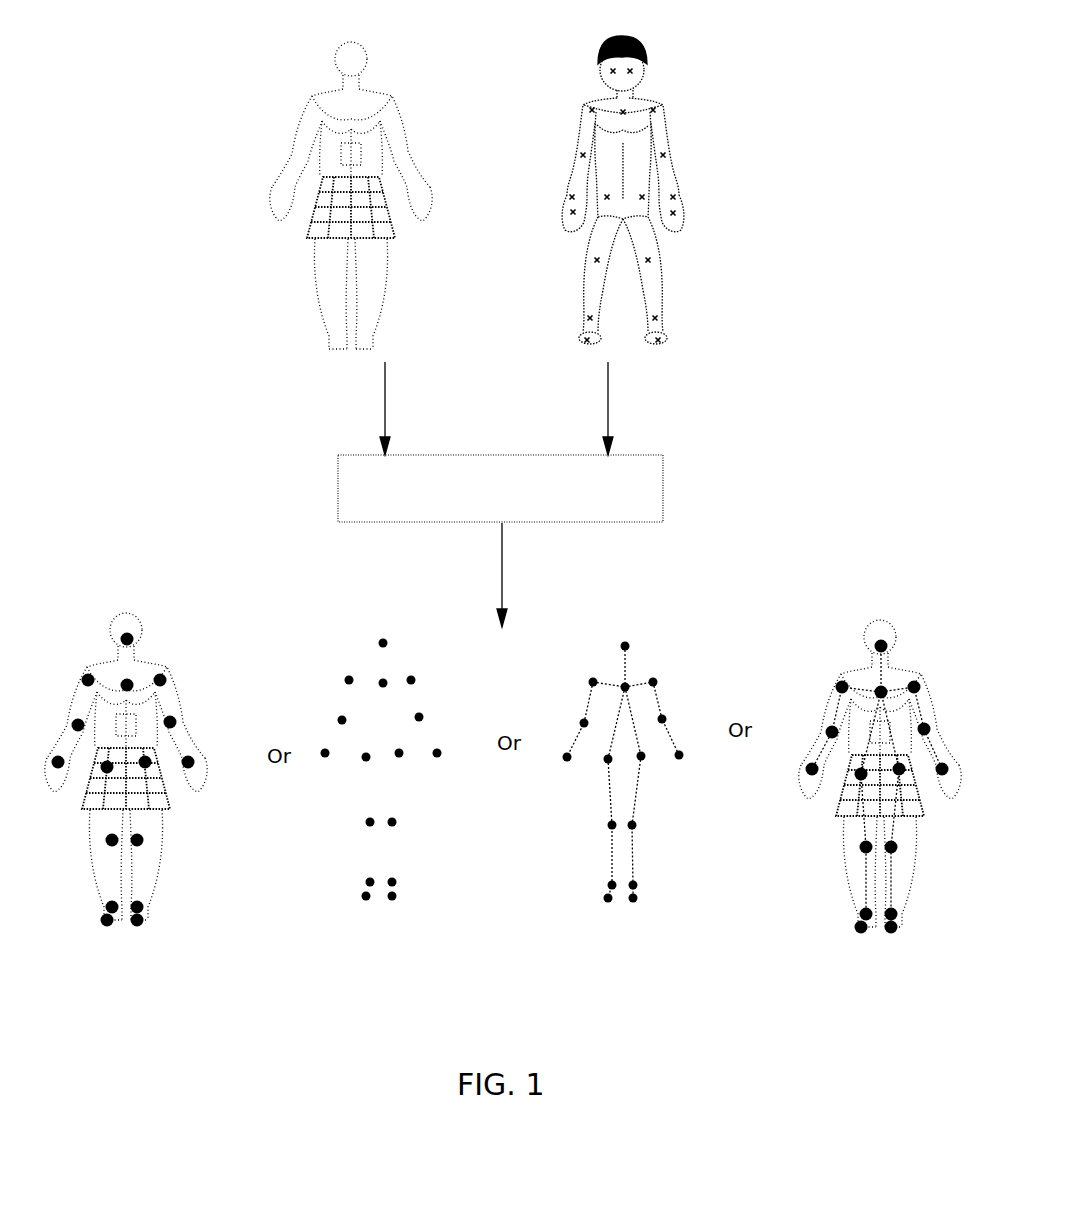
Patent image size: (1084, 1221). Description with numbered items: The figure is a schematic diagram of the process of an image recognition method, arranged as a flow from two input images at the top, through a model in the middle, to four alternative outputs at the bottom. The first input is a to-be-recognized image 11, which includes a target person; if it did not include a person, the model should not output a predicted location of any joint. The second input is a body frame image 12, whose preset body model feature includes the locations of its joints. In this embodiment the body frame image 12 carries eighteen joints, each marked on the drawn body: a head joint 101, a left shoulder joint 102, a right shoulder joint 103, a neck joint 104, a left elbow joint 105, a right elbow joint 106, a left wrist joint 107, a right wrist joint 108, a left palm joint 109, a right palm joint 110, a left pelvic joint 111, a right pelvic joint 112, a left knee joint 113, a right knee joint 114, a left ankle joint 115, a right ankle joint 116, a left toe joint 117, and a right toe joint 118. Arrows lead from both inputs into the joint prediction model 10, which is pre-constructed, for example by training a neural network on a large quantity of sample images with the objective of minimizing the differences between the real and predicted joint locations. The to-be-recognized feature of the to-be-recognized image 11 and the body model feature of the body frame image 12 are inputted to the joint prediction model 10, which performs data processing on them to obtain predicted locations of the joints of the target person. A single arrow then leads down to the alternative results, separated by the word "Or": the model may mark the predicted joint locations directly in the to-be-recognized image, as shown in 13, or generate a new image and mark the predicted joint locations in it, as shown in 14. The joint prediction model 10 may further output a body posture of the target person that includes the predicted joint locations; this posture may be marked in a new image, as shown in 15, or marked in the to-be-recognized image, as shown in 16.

The joint prediction model 10 is at (665, 485).
The to-be-recognized image 11 is at (337, 47).
The body frame image 12 is at (628, 36).
The to-be-recognized image with marked joint locations 13 is at (123, 927).
The new image with marked joint locations 14 is at (382, 912).
The new image with marked body posture 15 is at (623, 910).
The to-be-recognized image with marked body posture 16 is at (858, 940).
The head joint 101 is at (633, 72).
The left shoulder joint 102 is at (654, 109).
The right shoulder joint 103 is at (592, 108).
The neck joint 104 is at (624, 113).
The left elbow joint 105 is at (669, 156).
The right elbow joint 106 is at (583, 152).
The left wrist joint 107 is at (677, 197).
The right wrist joint 108 is at (571, 195).
The left palm joint 109 is at (677, 214).
The right palm joint 110 is at (572, 211).
The left pelvic joint 111 is at (645, 200).
The right pelvic joint 112 is at (606, 199).
The left knee joint 113 is at (650, 263).
The right knee joint 114 is at (597, 262).
The left ankle joint 115 is at (658, 318).
The right ankle joint 116 is at (589, 318).
The left toe joint 117 is at (667, 336).
The right toe joint 118 is at (583, 336).